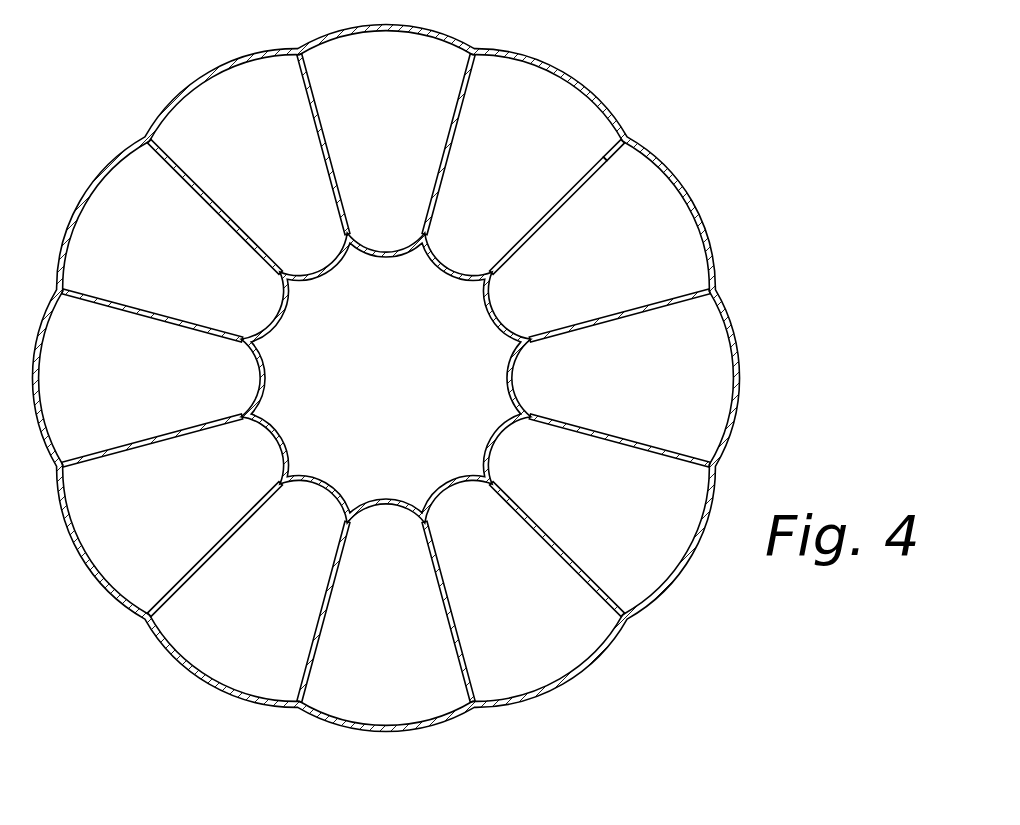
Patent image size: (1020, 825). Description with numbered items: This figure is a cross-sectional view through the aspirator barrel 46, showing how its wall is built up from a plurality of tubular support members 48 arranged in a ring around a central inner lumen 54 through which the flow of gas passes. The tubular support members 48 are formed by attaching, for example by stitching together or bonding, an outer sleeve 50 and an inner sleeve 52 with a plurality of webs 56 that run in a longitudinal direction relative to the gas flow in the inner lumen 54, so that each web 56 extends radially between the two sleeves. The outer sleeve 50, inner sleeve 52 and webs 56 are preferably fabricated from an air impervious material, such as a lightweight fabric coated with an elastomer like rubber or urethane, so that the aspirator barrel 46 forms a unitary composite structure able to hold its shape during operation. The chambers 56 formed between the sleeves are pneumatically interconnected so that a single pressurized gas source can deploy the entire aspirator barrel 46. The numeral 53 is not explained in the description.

The aspirator barrel 46 is at (125, 86).
The tubular support members 48 is at (558, 70).
The outer sleeve 50 is at (628, 134).
The inner sleeve 52 is at (444, 276).
The radial wall 53 is at (577, 187).
The inner lumen 54 is at (400, 386).
The webs 56 is at (400, 130).